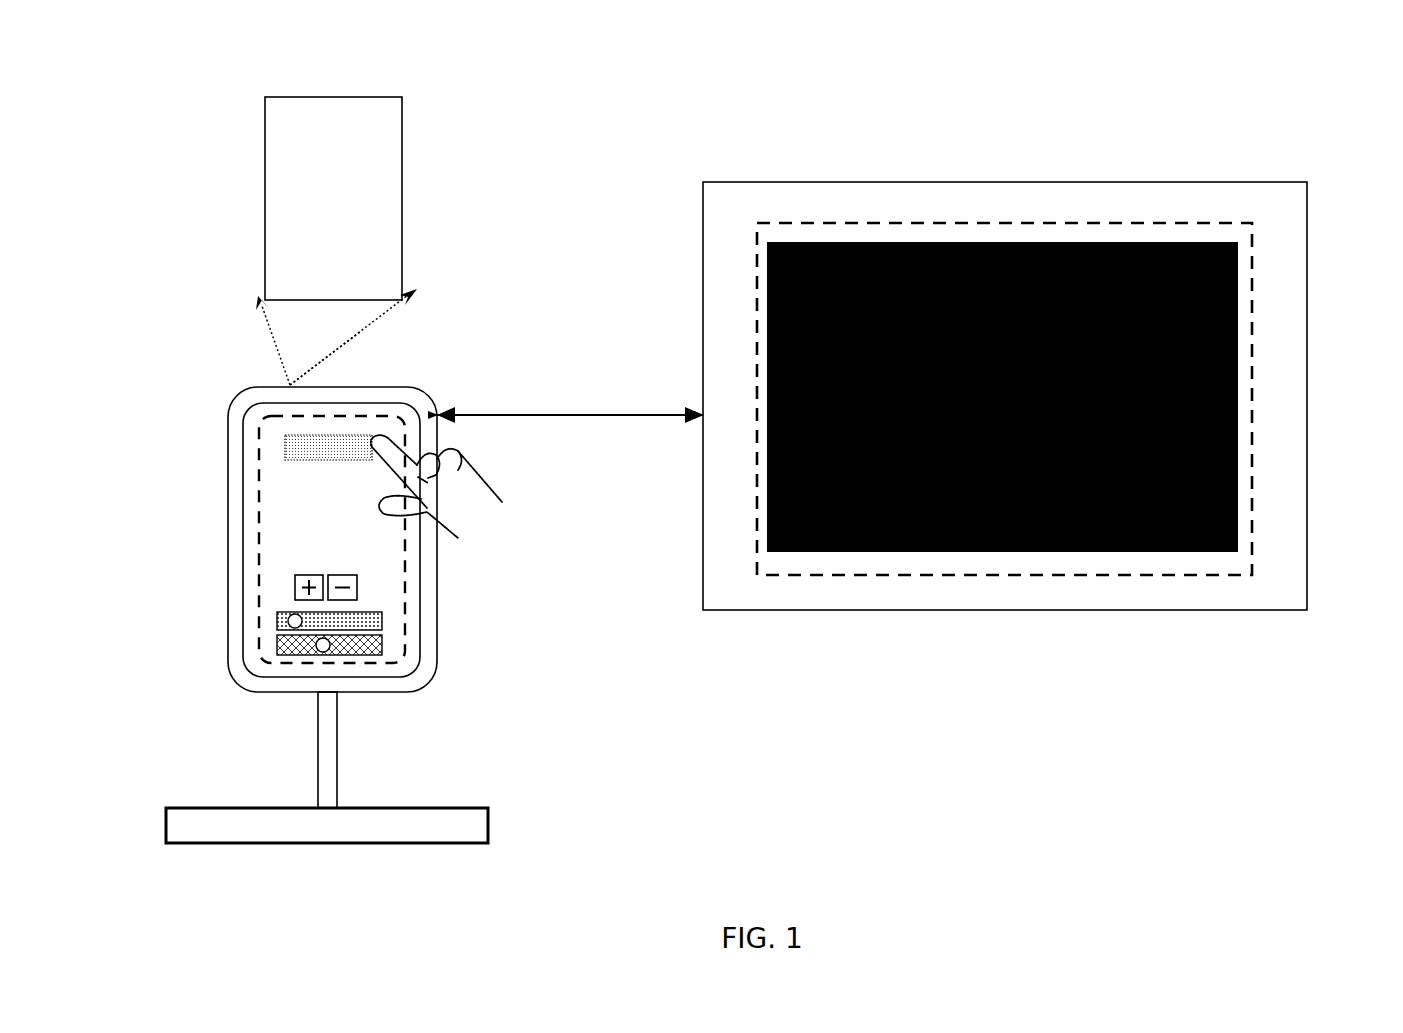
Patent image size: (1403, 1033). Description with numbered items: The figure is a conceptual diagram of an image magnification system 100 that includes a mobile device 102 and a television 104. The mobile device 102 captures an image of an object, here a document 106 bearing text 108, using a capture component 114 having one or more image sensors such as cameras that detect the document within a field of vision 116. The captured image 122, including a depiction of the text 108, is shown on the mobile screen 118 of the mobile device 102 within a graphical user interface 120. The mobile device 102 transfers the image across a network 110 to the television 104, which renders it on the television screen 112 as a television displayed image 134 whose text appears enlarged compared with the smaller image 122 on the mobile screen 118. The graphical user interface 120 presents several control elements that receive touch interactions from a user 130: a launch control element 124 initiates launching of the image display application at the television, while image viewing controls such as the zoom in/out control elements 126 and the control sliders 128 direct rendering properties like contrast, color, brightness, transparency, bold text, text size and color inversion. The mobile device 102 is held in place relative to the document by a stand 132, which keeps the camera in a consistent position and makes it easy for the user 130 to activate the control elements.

The image magnification system 100 is at (217, 48).
The mobile device 102 is at (237, 405).
The television 104 is at (1005, 182).
The document 106 is at (402, 127).
The text 108 is at (377, 205).
The network 110 is at (543, 410).
The television screen 112 is at (895, 223).
The capture component 114 is at (283, 385).
The field of vision 116 is at (350, 337).
The mobile screen 118 is at (240, 440).
The graphical user interface 120 is at (258, 495).
The image 122 is at (272, 530).
The launch control element 124 is at (363, 436).
The zoom in/out control elements 126 is at (300, 585).
The control sliders 128 is at (280, 642).
The user 130 is at (480, 473).
The stand 132 is at (332, 762).
The television displayed image 134 is at (1237, 377).